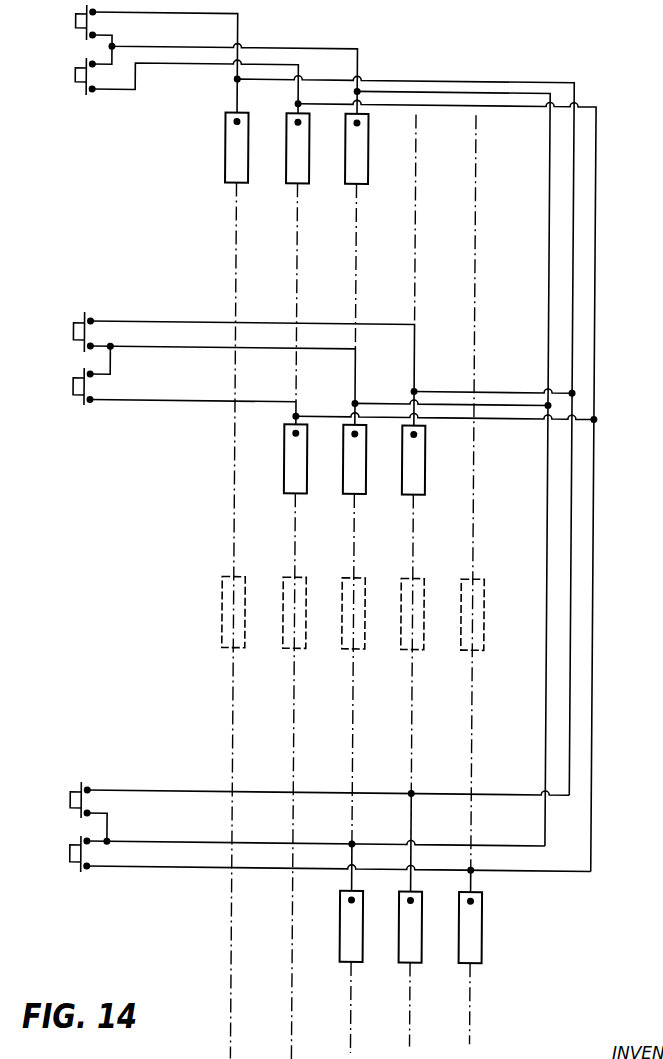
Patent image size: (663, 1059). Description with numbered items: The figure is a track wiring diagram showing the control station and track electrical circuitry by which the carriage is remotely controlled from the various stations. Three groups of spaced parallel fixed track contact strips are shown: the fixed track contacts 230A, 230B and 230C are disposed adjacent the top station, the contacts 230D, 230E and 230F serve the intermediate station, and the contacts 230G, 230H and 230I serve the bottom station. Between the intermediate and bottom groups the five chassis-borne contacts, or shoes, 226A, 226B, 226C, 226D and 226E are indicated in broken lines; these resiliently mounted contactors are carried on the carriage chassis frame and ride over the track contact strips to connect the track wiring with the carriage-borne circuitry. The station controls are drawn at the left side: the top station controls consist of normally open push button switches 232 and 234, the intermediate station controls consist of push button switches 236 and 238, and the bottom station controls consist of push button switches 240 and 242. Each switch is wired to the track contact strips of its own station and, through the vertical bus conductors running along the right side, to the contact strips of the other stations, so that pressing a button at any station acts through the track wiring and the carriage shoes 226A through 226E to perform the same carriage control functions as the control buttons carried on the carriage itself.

The push button switch 232 is at (73, 28).
The push button switch 234 is at (73, 82).
The push button switch 236 is at (73, 323).
The push button switch 238 is at (73, 395).
The push button switch 240 is at (73, 792).
The push button switch 242 is at (73, 856).
The fixed track contact 230A is at (224, 165).
The fixed track contact 230B is at (293, 174).
The fixed track contact 230C is at (367, 175).
The fixed track contact 230D is at (285, 470).
The fixed track contact 230E is at (347, 480).
The fixed track contact 230F is at (407, 490).
The fixed track contact 230G is at (343, 952).
The fixed track contact 230H is at (407, 962).
The fixed track contact 230I is at (470, 962).
The chassis-borne contact shoe 226A is at (244, 556).
The chassis-borne contact shoe 226B is at (298, 577).
The chassis-borne contact shoe 226C is at (364, 556).
The chassis-borne contact shoe 226D is at (424, 560).
The chassis-borne contact shoe 226E is at (480, 556).